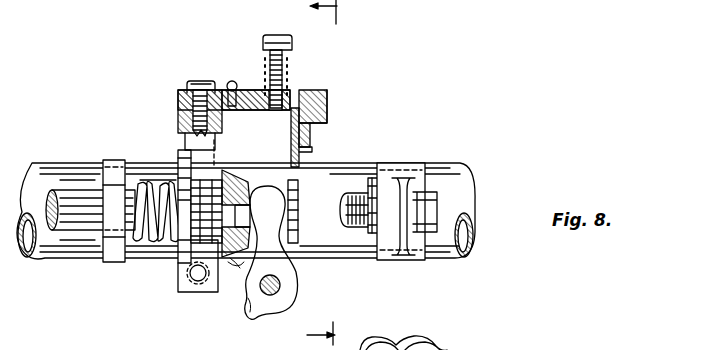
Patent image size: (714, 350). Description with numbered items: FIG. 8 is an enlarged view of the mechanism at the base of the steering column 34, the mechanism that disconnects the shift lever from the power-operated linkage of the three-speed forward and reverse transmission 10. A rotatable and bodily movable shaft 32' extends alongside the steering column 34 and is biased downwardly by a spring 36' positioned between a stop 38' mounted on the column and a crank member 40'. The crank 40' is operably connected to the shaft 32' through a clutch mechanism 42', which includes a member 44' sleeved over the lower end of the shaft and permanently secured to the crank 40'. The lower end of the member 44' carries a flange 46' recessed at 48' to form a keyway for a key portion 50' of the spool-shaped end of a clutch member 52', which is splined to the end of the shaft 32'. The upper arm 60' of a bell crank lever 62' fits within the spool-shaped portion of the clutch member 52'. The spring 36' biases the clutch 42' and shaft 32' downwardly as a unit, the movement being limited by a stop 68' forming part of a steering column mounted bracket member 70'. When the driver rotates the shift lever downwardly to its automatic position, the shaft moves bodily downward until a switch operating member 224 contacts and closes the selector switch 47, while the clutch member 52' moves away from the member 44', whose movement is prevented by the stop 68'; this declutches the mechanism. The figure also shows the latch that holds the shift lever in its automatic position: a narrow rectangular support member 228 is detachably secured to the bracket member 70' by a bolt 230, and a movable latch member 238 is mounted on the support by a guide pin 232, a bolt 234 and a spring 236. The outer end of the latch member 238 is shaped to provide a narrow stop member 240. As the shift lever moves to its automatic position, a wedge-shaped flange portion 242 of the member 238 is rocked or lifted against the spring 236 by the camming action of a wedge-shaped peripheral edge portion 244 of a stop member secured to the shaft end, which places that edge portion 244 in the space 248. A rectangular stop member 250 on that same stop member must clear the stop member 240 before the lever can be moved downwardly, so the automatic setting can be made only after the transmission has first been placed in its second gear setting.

The transmission 10 is at (334, 172).
The steering column 34 is at (453, 167).
The shaft 32' is at (80, 202).
The spring 36' is at (143, 236).
The stop 38' is at (98, 198).
The crank member 40' is at (161, 198).
The clutch mechanism 42' is at (210, 278).
The clutch member 44' is at (177, 243).
The flange 46' is at (239, 176).
The selector switch 47 is at (377, 185).
The recess 48' is at (255, 194).
The key portion 50' is at (262, 187).
The clutch member 52' is at (216, 299).
The upper arm 60' is at (291, 252).
The bell crank lever 62' is at (293, 308).
The stop 68' is at (219, 148).
The bracket member 70' is at (177, 113).
The switch operating member 224 is at (346, 192).
The support member 228 is at (236, 85).
The bolt 230 is at (185, 88).
The guide pin 232 is at (231, 81).
The bolt 234 is at (264, 62).
The spring 236 is at (262, 45).
The latch member 238 is at (292, 92).
The stop member 240 is at (327, 97).
The wedge-shaped flange portion 242 is at (302, 110).
The wedge-shaped peripheral edge portion 244 is at (292, 125).
The space 248 is at (320, 118).
The stop member 250 is at (310, 142).